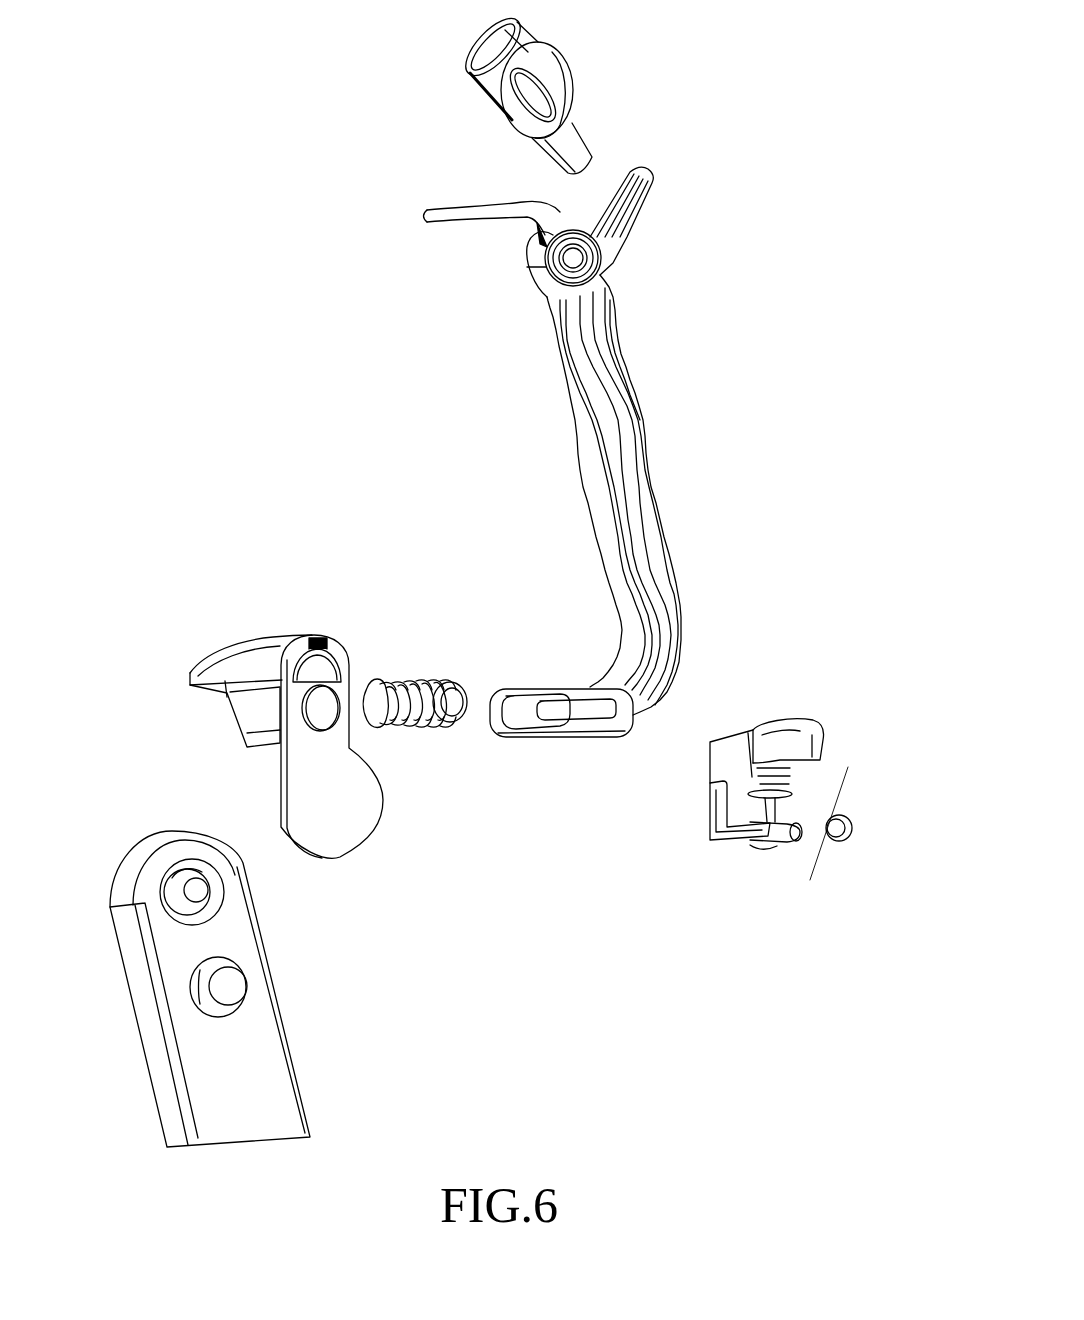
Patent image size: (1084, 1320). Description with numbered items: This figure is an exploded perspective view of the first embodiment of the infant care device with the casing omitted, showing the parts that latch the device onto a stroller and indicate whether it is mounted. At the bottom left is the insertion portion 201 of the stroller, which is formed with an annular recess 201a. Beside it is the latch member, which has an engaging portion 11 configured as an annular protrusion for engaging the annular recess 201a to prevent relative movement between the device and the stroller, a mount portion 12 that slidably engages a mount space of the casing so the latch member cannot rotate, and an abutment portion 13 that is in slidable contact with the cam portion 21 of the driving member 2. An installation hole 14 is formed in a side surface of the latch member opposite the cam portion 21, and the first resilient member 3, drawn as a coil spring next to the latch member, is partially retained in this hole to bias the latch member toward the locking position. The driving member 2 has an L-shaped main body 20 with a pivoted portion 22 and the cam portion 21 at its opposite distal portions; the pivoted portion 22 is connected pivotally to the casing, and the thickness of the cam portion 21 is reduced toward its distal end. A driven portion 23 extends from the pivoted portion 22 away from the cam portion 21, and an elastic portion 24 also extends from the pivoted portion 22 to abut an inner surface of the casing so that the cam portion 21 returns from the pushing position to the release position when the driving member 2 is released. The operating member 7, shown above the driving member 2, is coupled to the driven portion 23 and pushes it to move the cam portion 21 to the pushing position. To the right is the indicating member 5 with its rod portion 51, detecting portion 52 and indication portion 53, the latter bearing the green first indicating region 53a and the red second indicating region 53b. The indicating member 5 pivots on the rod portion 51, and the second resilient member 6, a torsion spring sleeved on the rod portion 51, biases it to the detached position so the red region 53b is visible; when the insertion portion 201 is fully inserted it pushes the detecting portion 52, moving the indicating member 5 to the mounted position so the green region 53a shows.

The driving member 2 is at (574, 452).
The first resilient member 3 is at (413, 683).
The indicating member 5 is at (718, 763).
The second resilient member 6 is at (845, 843).
The operating member 7 is at (557, 62).
The engaging portion 11 is at (250, 694).
The mount portion 12 is at (227, 658).
The abutment portion 13 is at (250, 715).
The installation hole 14 is at (320, 703).
The main body 20 is at (627, 383).
The cam portion 21 is at (590, 713).
The pivoted portion 22 is at (555, 282).
The driven portion 23 is at (652, 203).
The elastic portion 24 is at (477, 222).
The rod portion 51 is at (753, 850).
The detecting portion 52 is at (717, 827).
The indication portion 53 is at (741, 718).
The first indicating region 53a is at (773, 743).
The second indicating region 53b is at (808, 733).
The insertion portion 201 is at (275, 989).
The annular recess 201a is at (213, 902).